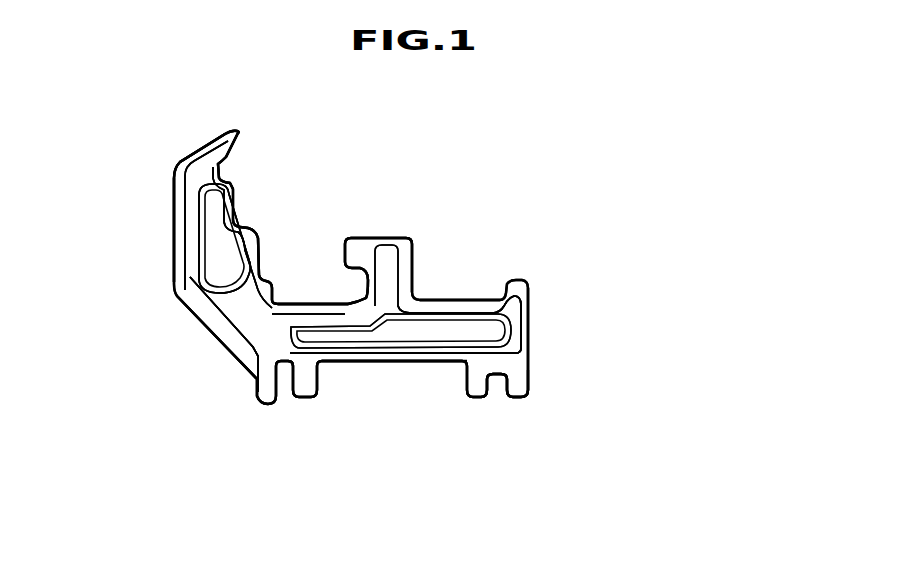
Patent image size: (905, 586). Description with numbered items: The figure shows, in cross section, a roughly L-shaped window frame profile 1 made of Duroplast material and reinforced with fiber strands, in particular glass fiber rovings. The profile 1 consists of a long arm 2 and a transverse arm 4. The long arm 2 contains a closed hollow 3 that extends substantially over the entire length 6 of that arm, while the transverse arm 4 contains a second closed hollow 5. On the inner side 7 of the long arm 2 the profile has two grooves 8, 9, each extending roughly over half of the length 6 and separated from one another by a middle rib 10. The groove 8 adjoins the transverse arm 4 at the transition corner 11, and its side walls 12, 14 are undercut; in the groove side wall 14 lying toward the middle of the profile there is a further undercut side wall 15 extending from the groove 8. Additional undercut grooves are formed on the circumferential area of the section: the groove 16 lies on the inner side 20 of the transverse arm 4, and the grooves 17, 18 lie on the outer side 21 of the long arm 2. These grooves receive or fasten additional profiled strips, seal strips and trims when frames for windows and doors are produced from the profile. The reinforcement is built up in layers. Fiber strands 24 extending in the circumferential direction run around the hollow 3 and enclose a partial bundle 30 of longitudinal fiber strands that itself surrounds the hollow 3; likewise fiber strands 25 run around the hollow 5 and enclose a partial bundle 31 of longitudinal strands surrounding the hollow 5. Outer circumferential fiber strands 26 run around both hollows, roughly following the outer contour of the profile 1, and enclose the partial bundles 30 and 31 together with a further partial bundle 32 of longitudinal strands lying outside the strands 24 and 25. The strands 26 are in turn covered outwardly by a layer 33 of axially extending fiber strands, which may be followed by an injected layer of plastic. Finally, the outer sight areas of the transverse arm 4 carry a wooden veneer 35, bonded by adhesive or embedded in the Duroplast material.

The profile 1 is at (106, 364).
The long arm 2 is at (522, 333).
The closed hollow 3 is at (402, 338).
The transverse arm 4 is at (213, 142).
The closed hollow 5 is at (240, 283).
The length of the long arm 6 is at (525, 455).
The inner side of the long arm 7 is at (446, 218).
The groove 8 is at (302, 304).
The groove 9 is at (452, 297).
The middle rib 10 is at (363, 252).
The transition corner 11 is at (281, 303).
The side wall of groove 12 is at (275, 303).
The side wall of groove 14 is at (347, 254).
The undercut side wall 15 is at (357, 292).
The groove 16 is at (268, 171).
The groove 17 is at (278, 373).
The groove 18 is at (500, 378).
The inner side of the transverse arm 20 is at (261, 202).
The outer side of the long arm 21 is at (423, 392).
The circumferential fiber strands 24 is at (291, 362).
The circumferential fiber strands 25 is at (203, 244).
The outer circumferential fiber strands 26 is at (237, 340).
The partial bundle of longitudinal fiber strands 30 is at (467, 316).
The partial bundle of longitudinal fiber strands 31 is at (200, 294).
The partial bundle of longitudinal fiber strands 32 is at (253, 347).
The layer of axially extending fiber strands 33 is at (197, 209).
The wooden veneer 35 is at (186, 160).